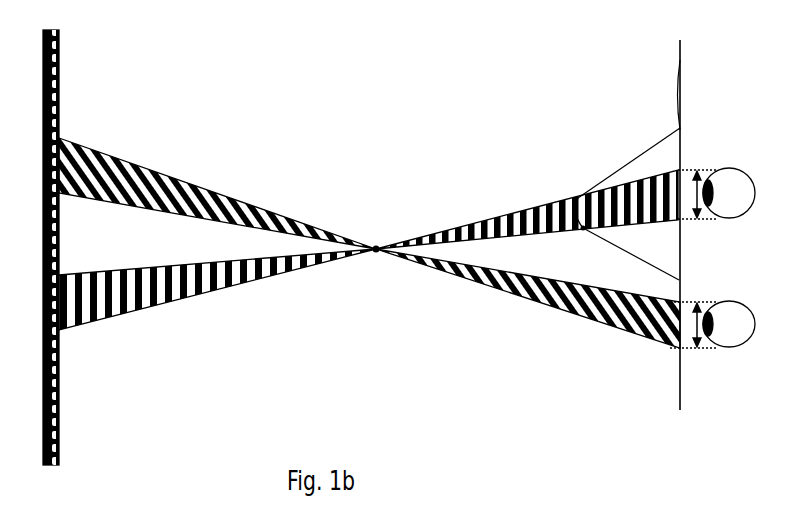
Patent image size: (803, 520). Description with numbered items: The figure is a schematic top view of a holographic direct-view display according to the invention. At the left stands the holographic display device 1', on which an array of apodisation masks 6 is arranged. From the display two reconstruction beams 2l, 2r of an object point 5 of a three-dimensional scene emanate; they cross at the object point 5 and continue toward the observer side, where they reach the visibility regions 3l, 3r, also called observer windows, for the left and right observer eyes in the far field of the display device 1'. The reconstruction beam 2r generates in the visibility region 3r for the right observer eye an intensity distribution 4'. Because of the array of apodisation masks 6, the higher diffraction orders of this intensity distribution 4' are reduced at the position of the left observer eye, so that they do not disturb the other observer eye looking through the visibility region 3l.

The holographic display device 1' is at (50, 260).
The array of apodisation masks 6 is at (60, 405).
The reconstruction beam 2l is at (248, 212).
The reconstruction beam 2r is at (252, 265).
The object point 5 is at (376, 249).
The intensity distribution 4' is at (528, 204).
The visibility region 3r is at (716, 181).
The visibility region 3l is at (565, 312).